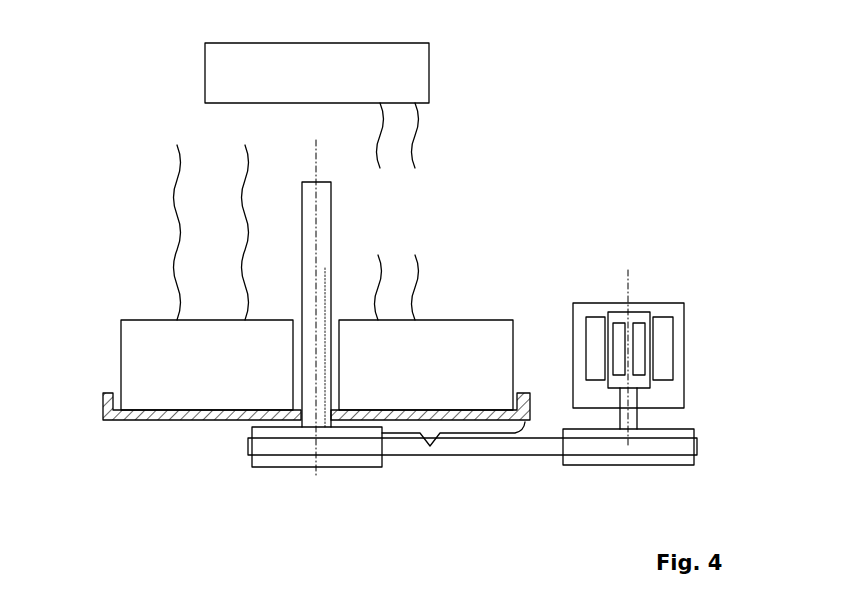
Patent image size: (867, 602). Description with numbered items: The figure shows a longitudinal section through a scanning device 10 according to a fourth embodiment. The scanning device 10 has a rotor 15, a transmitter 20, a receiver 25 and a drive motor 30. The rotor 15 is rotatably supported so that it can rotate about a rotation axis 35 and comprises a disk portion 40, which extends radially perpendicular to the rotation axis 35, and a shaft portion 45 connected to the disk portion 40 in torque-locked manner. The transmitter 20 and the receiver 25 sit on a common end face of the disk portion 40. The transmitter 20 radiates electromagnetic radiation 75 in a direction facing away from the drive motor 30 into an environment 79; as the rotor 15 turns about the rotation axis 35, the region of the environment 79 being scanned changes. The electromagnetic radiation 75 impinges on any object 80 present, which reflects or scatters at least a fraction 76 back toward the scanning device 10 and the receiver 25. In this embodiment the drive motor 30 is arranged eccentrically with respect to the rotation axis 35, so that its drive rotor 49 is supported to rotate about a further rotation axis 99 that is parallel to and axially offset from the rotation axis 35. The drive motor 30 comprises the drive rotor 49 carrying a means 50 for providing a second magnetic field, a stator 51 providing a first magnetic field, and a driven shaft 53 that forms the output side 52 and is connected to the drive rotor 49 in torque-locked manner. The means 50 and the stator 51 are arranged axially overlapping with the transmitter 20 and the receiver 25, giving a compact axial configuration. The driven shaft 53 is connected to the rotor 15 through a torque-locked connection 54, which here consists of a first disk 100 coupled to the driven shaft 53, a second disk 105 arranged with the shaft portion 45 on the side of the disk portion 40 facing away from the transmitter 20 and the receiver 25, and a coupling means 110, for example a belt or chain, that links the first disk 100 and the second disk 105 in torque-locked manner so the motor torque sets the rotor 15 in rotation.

The scanning device 10 is at (503, 168).
The rotor 15 is at (173, 422).
The transmitter 20 is at (213, 335).
The receiver 25 is at (478, 333).
The drive motor 30 is at (685, 326).
The rotation axis 35 is at (312, 175).
The disk portion 40 is at (430, 447).
The shaft portion 45 is at (333, 229).
The drive rotor 49 is at (616, 322).
The means for making a second magnetic field available 50 is at (619, 327).
The stator 51 is at (590, 343).
The output side 52 is at (606, 410).
The driven shaft 53 is at (640, 421).
The torque-locked connection 54 is at (302, 480).
The electromagnetic radiation 75 is at (245, 167).
The fraction of the electromagnetic radiation 76 is at (420, 272).
The environment 79 is at (464, 186).
The object 80 is at (205, 73).
The further rotation axis 99 is at (630, 292).
The first disk 100 is at (665, 464).
The second disk 105 is at (275, 466).
The coupling means 110 is at (493, 456).